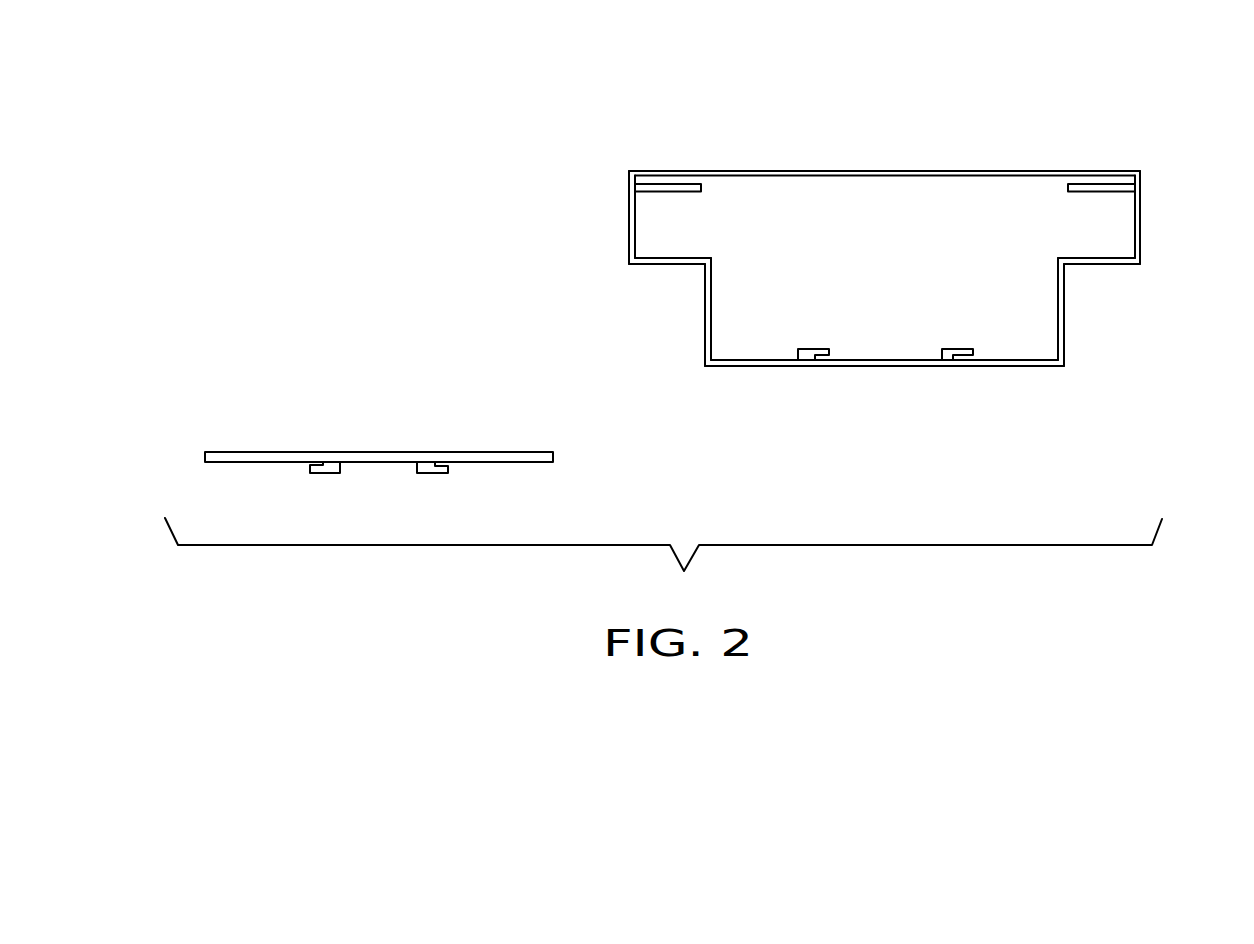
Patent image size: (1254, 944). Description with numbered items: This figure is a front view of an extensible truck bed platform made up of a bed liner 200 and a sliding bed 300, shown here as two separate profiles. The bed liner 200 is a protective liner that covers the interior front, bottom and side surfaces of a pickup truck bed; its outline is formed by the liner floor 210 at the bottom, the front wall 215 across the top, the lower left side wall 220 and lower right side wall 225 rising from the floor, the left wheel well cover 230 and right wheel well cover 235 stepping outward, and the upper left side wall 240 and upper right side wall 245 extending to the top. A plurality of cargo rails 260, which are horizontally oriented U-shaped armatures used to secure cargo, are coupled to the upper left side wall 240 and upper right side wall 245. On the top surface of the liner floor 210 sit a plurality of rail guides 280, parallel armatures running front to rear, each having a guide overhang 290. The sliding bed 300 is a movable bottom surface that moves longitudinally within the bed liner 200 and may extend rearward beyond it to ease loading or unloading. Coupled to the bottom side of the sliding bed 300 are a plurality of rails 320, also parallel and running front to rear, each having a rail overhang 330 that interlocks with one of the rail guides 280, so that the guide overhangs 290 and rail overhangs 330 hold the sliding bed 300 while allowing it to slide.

The bed liner 200 is at (1125, 147).
The liner floor 210 is at (1018, 367).
The front wall 215 is at (875, 200).
The lower left side wall 220 is at (703, 335).
The lower right side wall 225 is at (1063, 303).
The left wheel well cover 230 is at (675, 259).
The right wheel well cover 235 is at (1095, 257).
The upper left side wall 240 is at (628, 227).
The upper right side wall 245 is at (1140, 213).
The plurality of cargo rails 260 is at (678, 184).
The plurality of rail guides 280 is at (885, 367).
The guide overhang 290 is at (844, 321).
The sliding bed 300 is at (545, 390).
The plurality of rails 320 is at (338, 472).
The rail overhang 330 is at (308, 472).